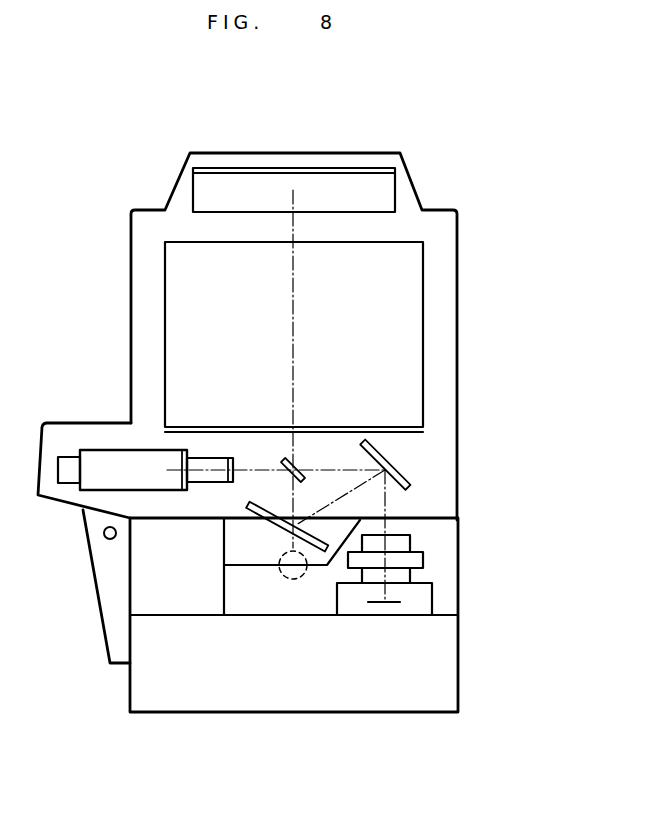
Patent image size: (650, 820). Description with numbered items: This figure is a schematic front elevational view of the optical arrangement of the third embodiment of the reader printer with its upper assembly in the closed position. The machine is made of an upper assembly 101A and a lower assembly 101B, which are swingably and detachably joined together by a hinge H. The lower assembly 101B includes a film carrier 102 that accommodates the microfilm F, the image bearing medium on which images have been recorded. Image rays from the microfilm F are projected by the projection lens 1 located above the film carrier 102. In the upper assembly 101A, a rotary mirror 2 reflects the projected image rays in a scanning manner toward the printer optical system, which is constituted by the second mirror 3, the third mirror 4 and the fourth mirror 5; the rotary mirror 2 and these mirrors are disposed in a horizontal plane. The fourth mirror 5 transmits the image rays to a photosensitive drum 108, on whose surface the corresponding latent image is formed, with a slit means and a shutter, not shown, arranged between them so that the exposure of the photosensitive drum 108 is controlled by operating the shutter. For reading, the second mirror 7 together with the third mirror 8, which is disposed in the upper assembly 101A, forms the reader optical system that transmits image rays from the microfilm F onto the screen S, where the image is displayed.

The upper assembly 101A is at (457, 247).
The lower assembly 101B is at (158, 714).
The third mirror 8 is at (397, 183).
The screen S is at (413, 303).
The third mirror 4 is at (73, 455).
The second mirror 3 is at (93, 483).
The fourth mirror 5 is at (288, 462).
The rotary mirror 2 is at (400, 472).
The second mirror 7 is at (290, 521).
The photosensitive drum 108 is at (294, 580).
The projection lens 1 is at (423, 560).
The film carrier 102 is at (425, 598).
The microfilm F is at (398, 604).
The hinge H is at (108, 540).